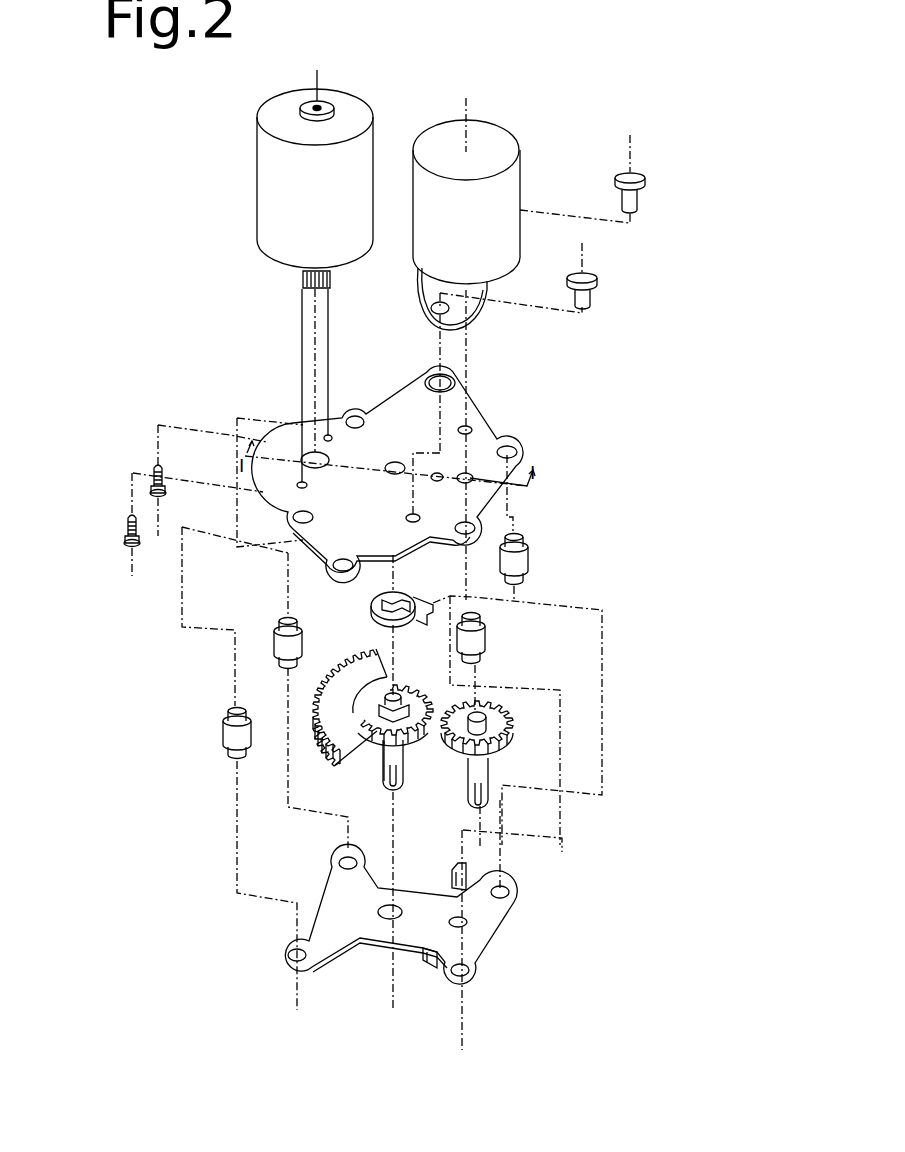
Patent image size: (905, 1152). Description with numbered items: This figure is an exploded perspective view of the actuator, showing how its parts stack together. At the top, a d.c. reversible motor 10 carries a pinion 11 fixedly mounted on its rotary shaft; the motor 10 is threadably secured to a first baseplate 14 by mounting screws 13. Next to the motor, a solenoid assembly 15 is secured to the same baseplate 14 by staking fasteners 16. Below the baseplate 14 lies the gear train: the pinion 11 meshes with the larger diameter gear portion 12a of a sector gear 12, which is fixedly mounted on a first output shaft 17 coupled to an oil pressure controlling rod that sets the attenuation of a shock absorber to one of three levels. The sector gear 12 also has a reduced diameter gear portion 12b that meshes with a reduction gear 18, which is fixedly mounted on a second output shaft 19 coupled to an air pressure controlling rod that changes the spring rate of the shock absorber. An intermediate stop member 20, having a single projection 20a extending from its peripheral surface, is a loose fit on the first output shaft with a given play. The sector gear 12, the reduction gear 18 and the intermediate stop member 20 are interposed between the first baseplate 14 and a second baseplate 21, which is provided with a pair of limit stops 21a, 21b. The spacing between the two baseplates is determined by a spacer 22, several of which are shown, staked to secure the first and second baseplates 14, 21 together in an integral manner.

The d.c. reversible motor 10 is at (358, 115).
The pinion 11 is at (303, 290).
The sector gear 12 is at (293, 751).
The larger diameter gear portion 12a is at (337, 760).
The reduced diameter gear portion 12b is at (417, 733).
The mounting screws 13 is at (150, 475).
The first baseplate 14 is at (527, 447).
The solenoid assembly 15 is at (505, 152).
The staking fasteners 16 is at (634, 214).
The first output shaft 17 is at (383, 780).
The reduction gear 18 is at (513, 718).
The second output shaft 19 is at (488, 788).
The intermediate stop member 20 is at (504, 598).
The projection 20a is at (410, 604).
The second baseplate 21 is at (433, 933).
The limit stop 21a is at (468, 880).
The limit stop 21b is at (437, 953).
The spacer 22 is at (222, 731).